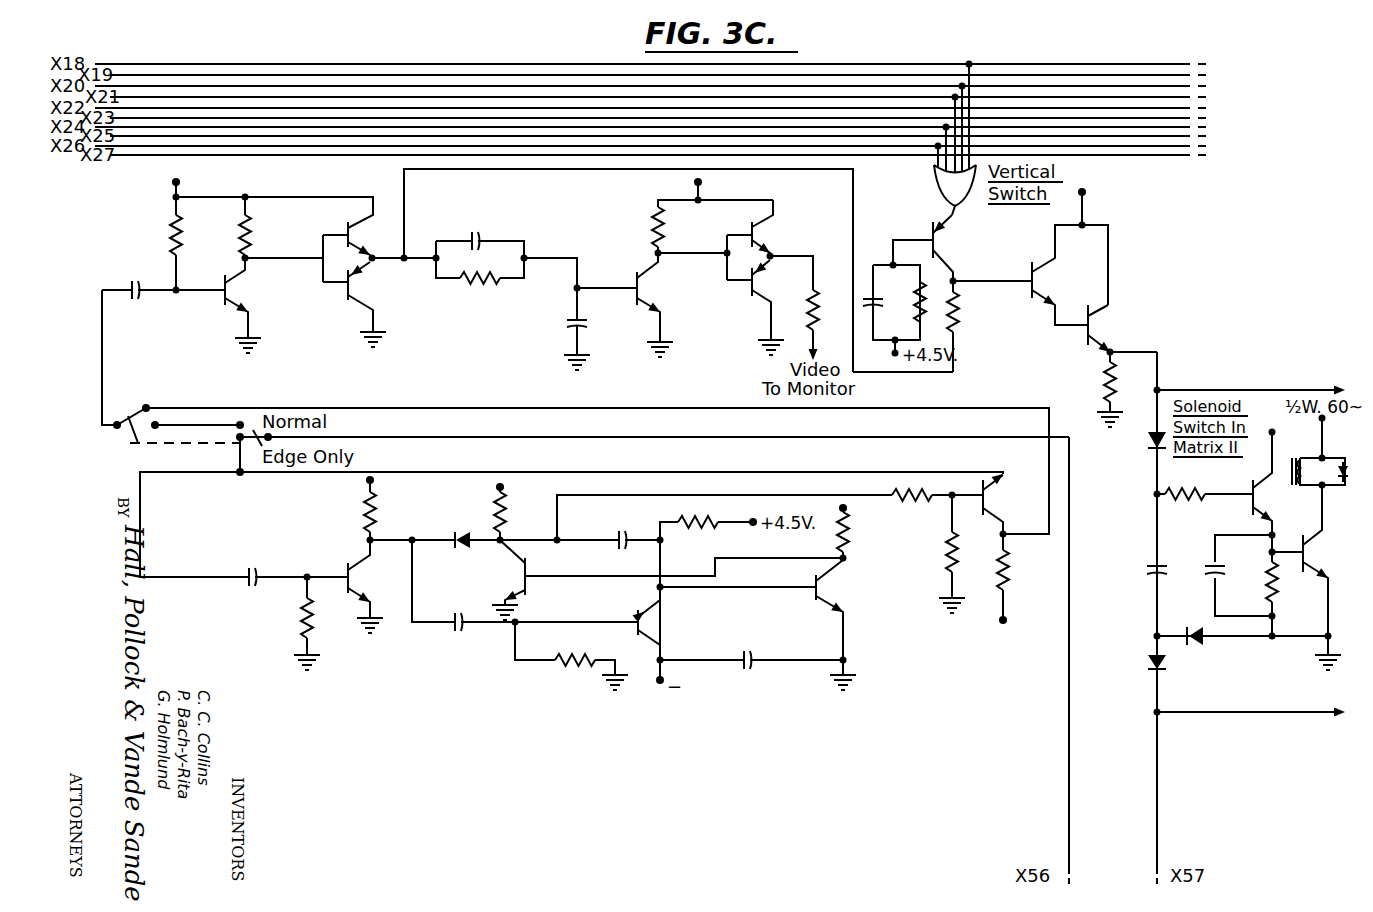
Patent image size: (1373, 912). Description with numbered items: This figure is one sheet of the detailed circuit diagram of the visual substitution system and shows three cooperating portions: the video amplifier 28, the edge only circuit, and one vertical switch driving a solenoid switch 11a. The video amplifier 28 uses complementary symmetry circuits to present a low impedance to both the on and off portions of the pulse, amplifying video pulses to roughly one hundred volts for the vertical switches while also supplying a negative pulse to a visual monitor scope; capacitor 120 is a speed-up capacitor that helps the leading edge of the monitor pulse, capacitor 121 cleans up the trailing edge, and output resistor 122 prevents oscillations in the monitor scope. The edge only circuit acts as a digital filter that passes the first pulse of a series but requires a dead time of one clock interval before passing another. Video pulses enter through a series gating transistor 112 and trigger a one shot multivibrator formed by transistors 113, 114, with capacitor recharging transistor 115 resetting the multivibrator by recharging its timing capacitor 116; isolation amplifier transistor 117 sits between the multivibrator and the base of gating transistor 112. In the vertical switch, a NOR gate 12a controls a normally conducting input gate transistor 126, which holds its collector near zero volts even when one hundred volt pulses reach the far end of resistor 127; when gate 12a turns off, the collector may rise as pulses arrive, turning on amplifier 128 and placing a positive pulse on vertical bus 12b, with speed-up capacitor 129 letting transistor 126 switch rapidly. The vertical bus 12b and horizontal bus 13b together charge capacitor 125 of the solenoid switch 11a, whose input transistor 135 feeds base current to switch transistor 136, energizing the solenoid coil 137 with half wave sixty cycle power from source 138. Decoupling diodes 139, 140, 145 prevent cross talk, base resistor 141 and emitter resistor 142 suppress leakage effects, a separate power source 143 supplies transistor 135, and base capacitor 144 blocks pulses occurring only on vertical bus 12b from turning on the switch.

The NOR gate 12a is at (945, 188).
The vertical bus 12b is at (1175, 388).
The horizontal bus 13b is at (1186, 716).
The solenoid switch 11a is at (1256, 672).
The video amplifier 28 is at (545, 323).
The series gating transistor 112 is at (986, 497).
The multivibrator transistor 113 is at (345, 572).
The multivibrator transistor 114 is at (821, 594).
The capacitor recharging transistor 115 is at (648, 621).
The timing capacitor 116 is at (620, 530).
The isolation amplifier transistor 117 is at (529, 572).
The speed-up capacitor 120 is at (480, 240).
The capacitor 121 is at (582, 325).
The output resistor 122 is at (812, 303).
The capacitor 125 is at (1150, 573).
The input gate transistor 126 is at (940, 242).
The resistor 127 is at (960, 305).
The amplifier 128 is at (1092, 289).
The speed-up capacitor 129 is at (892, 296).
The input transistor 135 is at (1252, 509).
The switch transistor 136 is at (1306, 552).
The solenoid coil 137 is at (1302, 486).
The source 138 is at (1322, 438).
The decoupling diode 139 is at (1150, 446).
The decoupling diode 140 is at (1150, 665).
The base resistor 141 is at (1215, 493).
The emitter resistor 142 is at (1282, 578).
The separate power source 143 is at (1269, 438).
The base capacitor 144 is at (1210, 572).
The decoupling diode 145 is at (1195, 650).